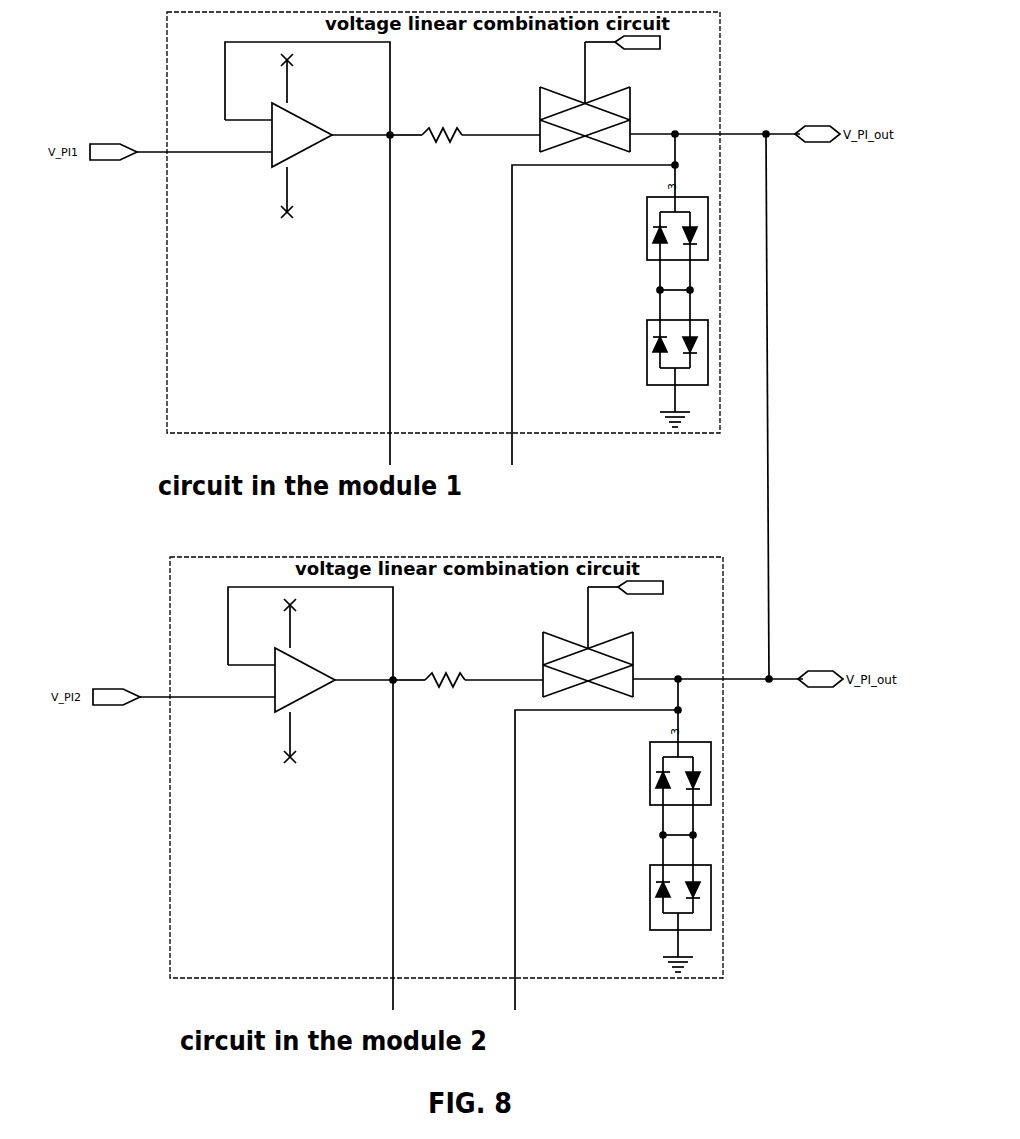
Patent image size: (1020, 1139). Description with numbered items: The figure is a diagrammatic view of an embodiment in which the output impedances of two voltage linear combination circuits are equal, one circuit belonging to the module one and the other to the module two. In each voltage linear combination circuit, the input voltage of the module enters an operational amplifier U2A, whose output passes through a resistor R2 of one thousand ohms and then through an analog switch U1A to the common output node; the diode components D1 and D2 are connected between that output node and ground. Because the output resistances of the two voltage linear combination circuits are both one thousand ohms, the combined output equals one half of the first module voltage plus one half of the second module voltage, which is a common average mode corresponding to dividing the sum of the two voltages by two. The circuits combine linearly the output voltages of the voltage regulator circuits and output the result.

The operational amplifier LM324 U2A is at (307, 136).
The resistor 1k R2 is at (465, 138).
The analog switch 14066 U1A is at (618, 94).
The diode pair D1 is at (663, 243).
The diode pair D2 is at (663, 351).